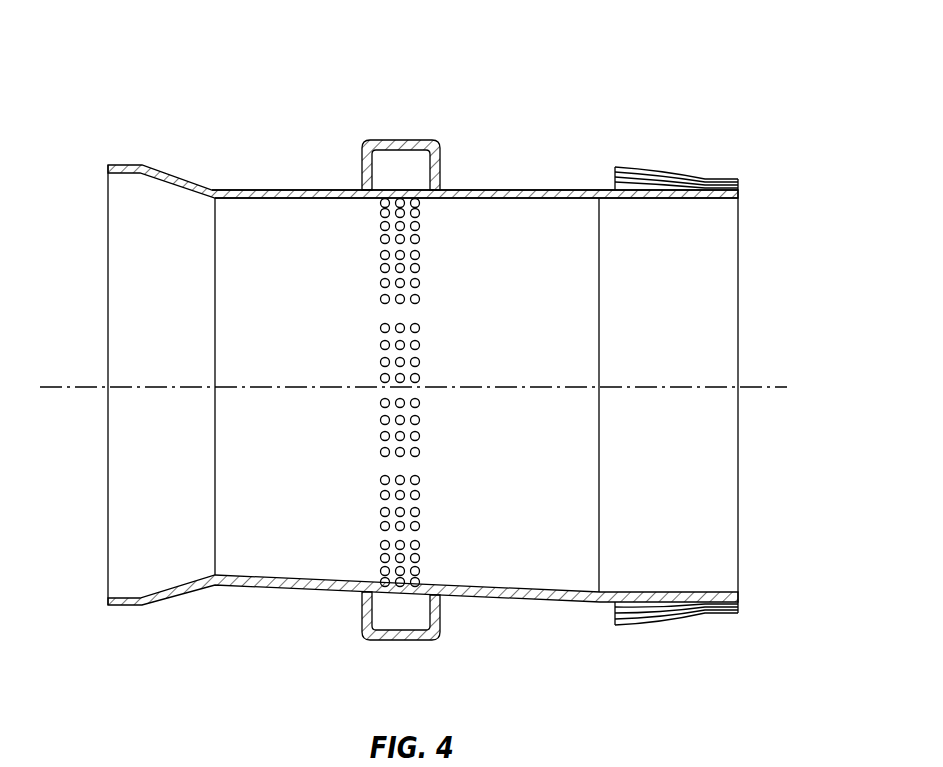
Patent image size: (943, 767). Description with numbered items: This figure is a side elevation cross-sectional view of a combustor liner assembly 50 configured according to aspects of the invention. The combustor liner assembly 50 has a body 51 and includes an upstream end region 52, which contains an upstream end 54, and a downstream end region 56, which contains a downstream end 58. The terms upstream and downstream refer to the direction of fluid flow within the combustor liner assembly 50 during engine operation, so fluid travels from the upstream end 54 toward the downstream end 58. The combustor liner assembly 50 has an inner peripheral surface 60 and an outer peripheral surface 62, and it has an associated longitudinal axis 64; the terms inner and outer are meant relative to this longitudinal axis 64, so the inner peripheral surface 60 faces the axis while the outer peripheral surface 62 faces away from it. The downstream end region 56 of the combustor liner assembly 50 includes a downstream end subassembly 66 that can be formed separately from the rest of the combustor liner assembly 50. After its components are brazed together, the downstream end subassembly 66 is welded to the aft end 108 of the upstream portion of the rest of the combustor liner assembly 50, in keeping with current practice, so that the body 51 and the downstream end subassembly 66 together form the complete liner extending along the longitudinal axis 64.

The combustor liner assembly 50 is at (268, 80).
The body 51 is at (274, 189).
The upstream end region 52 is at (180, 92).
The upstream end 54 is at (107, 238).
The downstream end region 56 is at (627, 92).
The downstream end 58 is at (738, 238).
The inner peripheral surface 60 is at (522, 199).
The outer peripheral surface 62 is at (498, 190).
The longitudinal axis 64 is at (772, 387).
The downstream end subassembly 66 is at (740, 652).
The aft end 108 is at (600, 530).